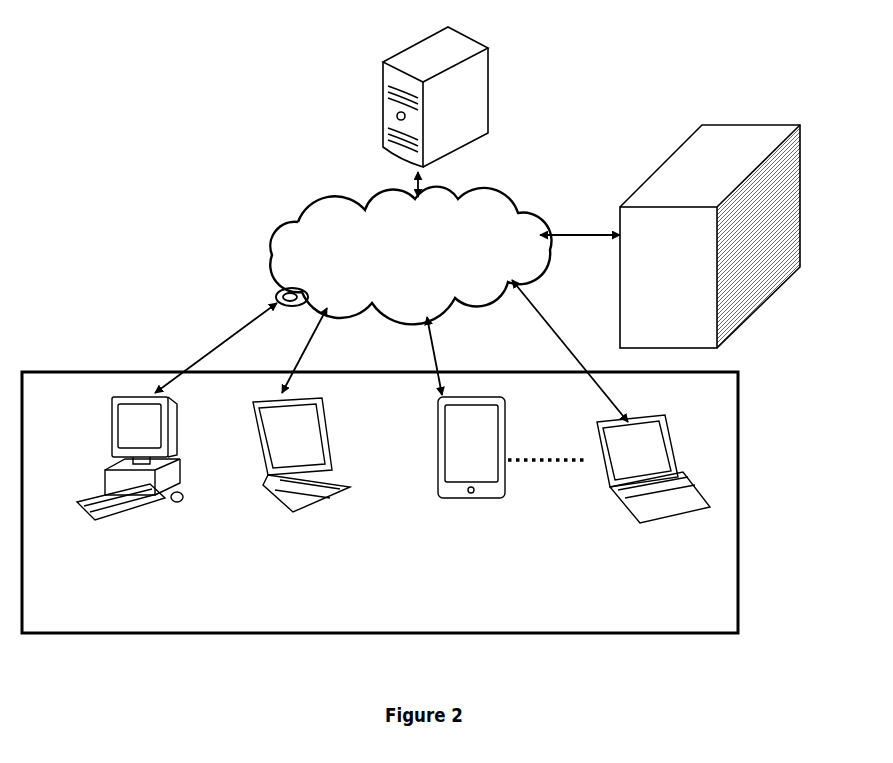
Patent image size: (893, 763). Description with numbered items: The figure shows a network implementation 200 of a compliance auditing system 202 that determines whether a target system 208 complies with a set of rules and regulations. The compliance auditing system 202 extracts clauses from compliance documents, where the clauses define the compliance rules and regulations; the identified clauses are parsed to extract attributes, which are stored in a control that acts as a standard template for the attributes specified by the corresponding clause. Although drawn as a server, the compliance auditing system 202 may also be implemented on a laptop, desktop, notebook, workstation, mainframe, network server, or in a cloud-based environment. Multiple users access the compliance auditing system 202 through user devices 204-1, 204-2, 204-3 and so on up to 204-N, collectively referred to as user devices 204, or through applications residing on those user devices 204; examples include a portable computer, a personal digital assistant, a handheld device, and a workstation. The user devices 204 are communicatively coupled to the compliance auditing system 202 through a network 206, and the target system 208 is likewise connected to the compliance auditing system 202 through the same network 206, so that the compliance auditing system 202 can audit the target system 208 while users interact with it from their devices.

The network implementation 200 is at (135, 177).
The compliance auditing system 202 is at (492, 73).
The user devices 204 is at (380, 502).
The user device 204-1 is at (127, 490).
The user device 204-2 is at (327, 490).
The electronic device (tablet) 204-3 is at (470, 497).
The user device 204-N is at (643, 497).
The network 206 is at (386, 261).
The target system 208 is at (710, 236).